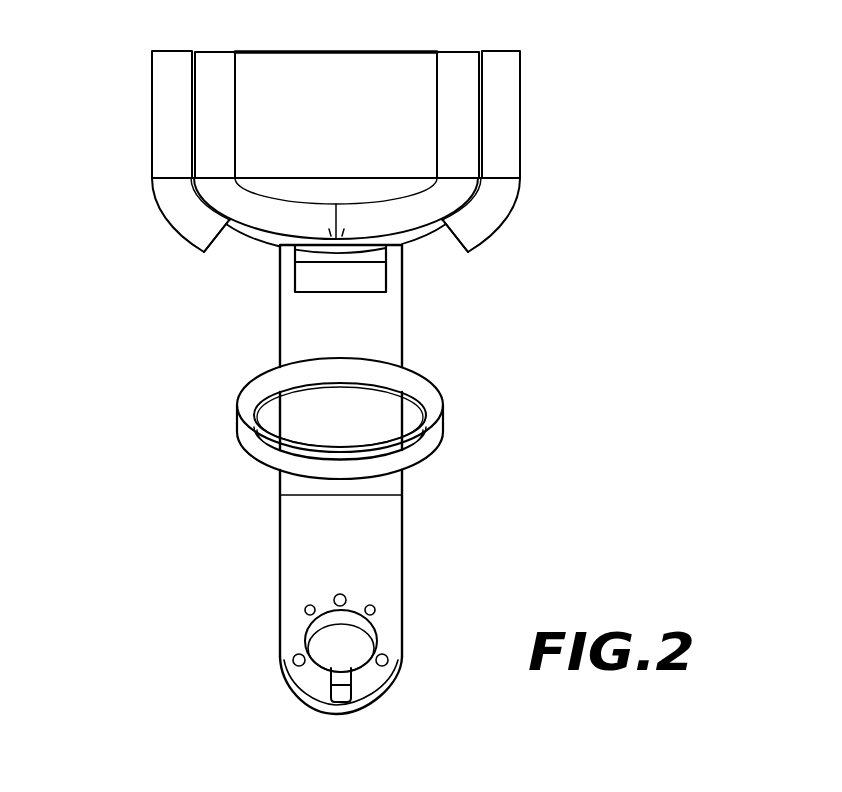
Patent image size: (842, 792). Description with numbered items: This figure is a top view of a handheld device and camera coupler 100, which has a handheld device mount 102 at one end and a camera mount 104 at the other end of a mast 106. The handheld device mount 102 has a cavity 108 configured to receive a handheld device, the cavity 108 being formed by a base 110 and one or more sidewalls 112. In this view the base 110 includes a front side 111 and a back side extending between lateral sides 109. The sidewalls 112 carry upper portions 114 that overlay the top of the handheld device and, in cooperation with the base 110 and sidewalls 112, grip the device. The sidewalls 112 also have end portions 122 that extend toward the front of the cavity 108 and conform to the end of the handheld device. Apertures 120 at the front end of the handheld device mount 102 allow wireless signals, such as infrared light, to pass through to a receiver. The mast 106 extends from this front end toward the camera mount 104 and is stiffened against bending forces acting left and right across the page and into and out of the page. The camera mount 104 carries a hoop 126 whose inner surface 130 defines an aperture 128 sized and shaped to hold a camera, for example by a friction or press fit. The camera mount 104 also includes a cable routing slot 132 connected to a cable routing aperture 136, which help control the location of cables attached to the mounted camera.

The handheld device and camera coupler 100 is at (630, 76).
The handheld device mount 102 is at (572, 136).
The camera mount 104 is at (453, 480).
The mast 106 is at (421, 350).
The cavity 108 is at (378, 67).
The lateral sides 109 is at (237, 77).
The base 110 is at (337, 63).
The front side 111 is at (273, 213).
The sidewalls 112 is at (136, 62).
The upper portions 114 is at (172, 57).
The apertures 120 is at (233, 253).
The end portions 122 is at (161, 229).
The hoop 126 is at (431, 396).
The aperture 128 is at (334, 420).
The inner surface 130 is at (265, 447).
The cable routing slot 132 is at (340, 697).
The cable routing aperture 136 is at (344, 643).